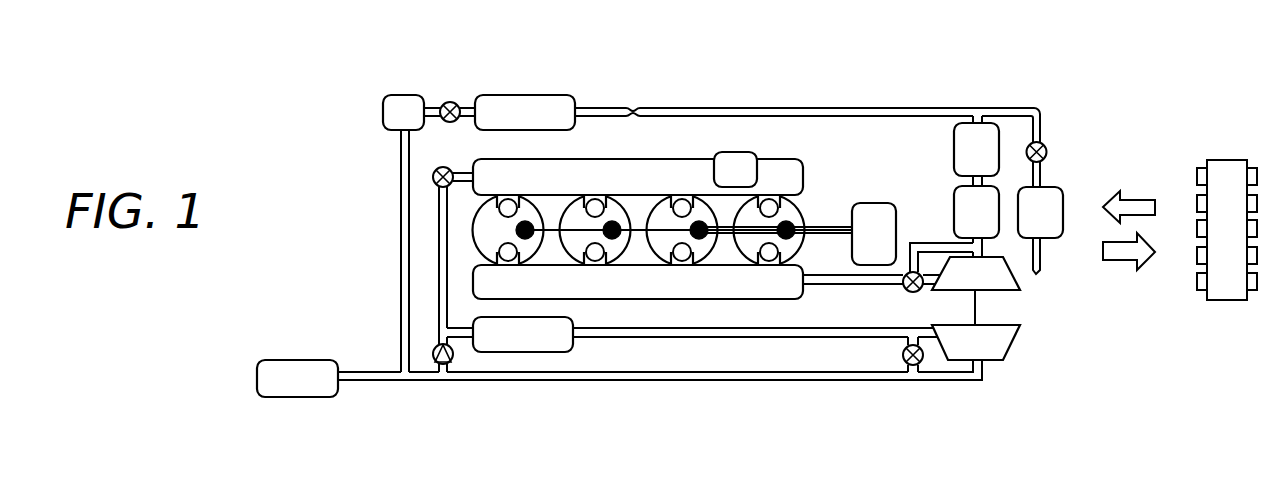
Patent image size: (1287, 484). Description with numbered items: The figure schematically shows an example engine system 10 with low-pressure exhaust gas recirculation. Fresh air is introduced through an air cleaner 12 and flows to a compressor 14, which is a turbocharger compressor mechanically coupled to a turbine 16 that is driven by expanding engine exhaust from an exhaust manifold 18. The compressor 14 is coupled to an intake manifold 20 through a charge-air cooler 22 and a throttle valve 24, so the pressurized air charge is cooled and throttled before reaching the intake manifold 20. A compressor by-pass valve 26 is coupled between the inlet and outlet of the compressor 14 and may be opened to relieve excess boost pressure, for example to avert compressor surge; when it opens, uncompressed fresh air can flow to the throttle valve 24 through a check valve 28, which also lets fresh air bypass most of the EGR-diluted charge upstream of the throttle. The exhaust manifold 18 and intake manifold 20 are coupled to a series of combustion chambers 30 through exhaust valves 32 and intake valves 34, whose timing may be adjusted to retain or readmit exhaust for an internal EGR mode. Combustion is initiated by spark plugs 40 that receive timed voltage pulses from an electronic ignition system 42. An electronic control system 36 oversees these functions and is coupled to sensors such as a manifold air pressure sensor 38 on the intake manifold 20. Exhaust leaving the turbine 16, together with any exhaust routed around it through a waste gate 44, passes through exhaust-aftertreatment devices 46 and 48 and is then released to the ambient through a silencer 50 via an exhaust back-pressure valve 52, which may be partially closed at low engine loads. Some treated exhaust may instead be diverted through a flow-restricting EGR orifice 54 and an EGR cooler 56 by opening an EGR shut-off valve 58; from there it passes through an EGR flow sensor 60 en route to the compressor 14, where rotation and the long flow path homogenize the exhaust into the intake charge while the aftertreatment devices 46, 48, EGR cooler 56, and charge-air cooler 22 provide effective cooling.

The engine system 10 is at (255, 101).
The air cleaner 12 is at (286, 389).
The compressor 14 is at (966, 352).
The turbine 16 is at (966, 284).
The exhaust manifold 18 is at (627, 291).
The intake manifold 20 is at (627, 189).
The charge-air cooler 22 is at (512, 346).
The throttle valve 24 is at (450, 189).
The compressor by-pass valve 26 is at (905, 363).
The check valve 28 is at (437, 362).
The combustion chambers 30 is at (690, 247).
The exhaust valves 32 is at (770, 262).
The intake valves 34 is at (509, 201).
The electronic control system 36 is at (1216, 243).
The manifold air pressure sensor 38 is at (724, 181).
The spark plugs 40 is at (528, 240).
The electronic ignition system 42 is at (863, 245).
The waste gate 44 is at (909, 291).
The exhaust-aftertreatment device 46 is at (966, 223).
The exhaust-aftertreatment device 48 is at (966, 161).
The silencer 50 is at (1029, 224).
The exhaust back-pressure valve 52 is at (1049, 150).
The flow-restricting EGR orifice 54 is at (630, 88).
The EGR cooler 56 is at (514, 124).
The EGR shut-off valve 58 is at (452, 100).
The EGR flow sensor 60 is at (392, 124).